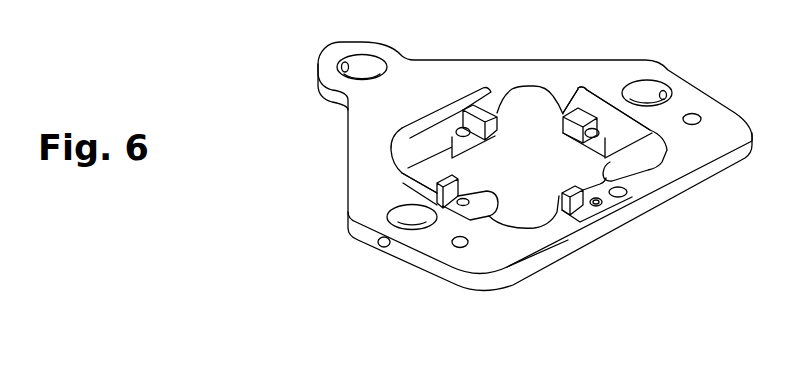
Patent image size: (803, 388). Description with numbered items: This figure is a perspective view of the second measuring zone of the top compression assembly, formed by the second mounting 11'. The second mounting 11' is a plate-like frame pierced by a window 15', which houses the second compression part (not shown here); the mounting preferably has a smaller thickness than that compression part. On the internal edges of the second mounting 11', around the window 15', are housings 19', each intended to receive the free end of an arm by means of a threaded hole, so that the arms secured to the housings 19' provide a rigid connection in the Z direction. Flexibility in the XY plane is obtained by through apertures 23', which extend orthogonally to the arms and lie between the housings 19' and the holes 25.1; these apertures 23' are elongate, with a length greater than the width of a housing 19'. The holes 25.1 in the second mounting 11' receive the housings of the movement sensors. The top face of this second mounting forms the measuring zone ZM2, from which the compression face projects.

The second mounting 11' is at (522, 166).
The window 15' is at (529, 198).
The housing 19' is at (517, 109).
The through aperture 23' is at (526, 103).
The hole 25.1 is at (645, 90).
The measuring zone ZM2 is at (568, 240).